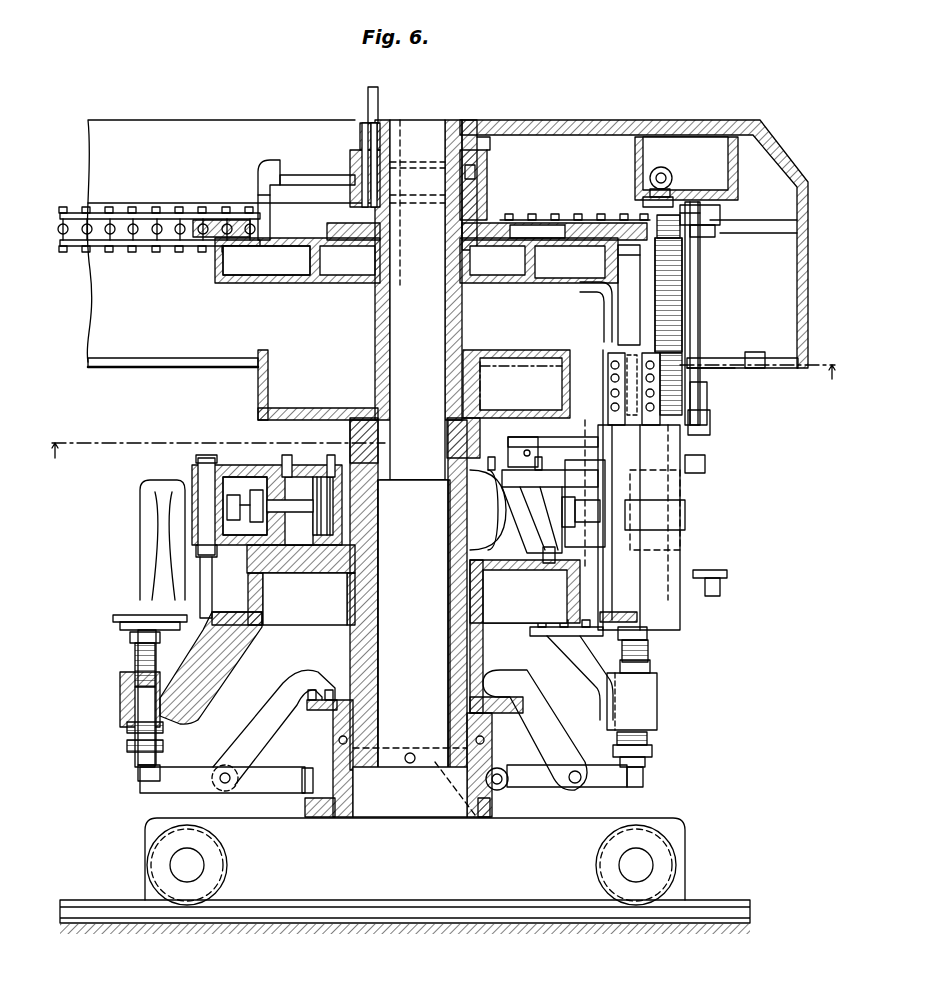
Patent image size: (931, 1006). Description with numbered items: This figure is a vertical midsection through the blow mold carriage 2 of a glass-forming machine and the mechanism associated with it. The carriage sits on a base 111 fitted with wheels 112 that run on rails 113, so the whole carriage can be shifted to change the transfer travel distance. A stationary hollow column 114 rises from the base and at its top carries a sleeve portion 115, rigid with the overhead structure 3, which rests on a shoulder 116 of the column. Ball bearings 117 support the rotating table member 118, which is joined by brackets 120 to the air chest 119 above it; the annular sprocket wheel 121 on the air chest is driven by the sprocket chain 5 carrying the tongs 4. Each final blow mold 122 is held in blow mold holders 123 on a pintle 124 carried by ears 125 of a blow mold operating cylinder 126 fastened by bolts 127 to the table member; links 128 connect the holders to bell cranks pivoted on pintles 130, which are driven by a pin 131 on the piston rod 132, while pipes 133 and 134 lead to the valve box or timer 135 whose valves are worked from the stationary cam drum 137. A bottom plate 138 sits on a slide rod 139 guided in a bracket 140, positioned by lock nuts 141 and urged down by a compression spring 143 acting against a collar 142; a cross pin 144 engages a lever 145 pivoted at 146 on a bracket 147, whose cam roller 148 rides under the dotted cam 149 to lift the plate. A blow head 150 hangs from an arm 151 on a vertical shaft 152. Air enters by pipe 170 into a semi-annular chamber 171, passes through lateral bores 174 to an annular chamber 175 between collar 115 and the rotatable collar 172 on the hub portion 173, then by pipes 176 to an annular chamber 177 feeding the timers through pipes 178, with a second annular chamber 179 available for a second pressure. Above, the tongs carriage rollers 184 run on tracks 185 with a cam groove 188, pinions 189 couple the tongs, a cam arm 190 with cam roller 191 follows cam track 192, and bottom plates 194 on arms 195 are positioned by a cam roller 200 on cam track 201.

The blow mold carriage 2 is at (118, 531).
The overhead structure 3 is at (186, 125).
The tongs 4 is at (738, 512).
The sprocket chain 5 is at (135, 238).
The base 111 is at (250, 838).
The wheels 112 is at (680, 855).
The rails 113 is at (78, 900).
The stationary hollow column 114 is at (355, 808).
The sleeve portion 115 is at (468, 128).
The shoulder 116 is at (395, 240).
The ball bearings 117 is at (305, 768).
The table member 118 is at (360, 650).
The air chest 119 is at (520, 280).
The brackets 120 is at (660, 625).
The annular sprocket wheel 121 is at (212, 232).
The final blow molds 122 is at (140, 490).
The blow mold holders 123 is at (690, 518).
The pintle 124 is at (205, 455).
The ears 125 is at (232, 470).
The blow mold operating cylinder 126 is at (300, 460).
The bolts 127 is at (525, 570).
The links 128 is at (605, 540).
The pintles 130 is at (580, 478).
The pin 131 is at (262, 490).
The piston rod 132 is at (300, 555).
The pipe 133 is at (298, 465).
The pipe 134 is at (365, 470).
The valve box or timer 135 is at (702, 425).
The stationary cam drum 137 is at (255, 350).
The bottom plate 138 is at (128, 618).
The slide rod 139 is at (140, 690).
The bracket 140 is at (270, 635).
The lock nuts 141 is at (130, 658).
The collar 142 is at (127, 748).
The compression spring 143 is at (127, 730).
The cross pin 144 is at (140, 775).
The lever 145 is at (185, 768).
The pivot 146 is at (215, 782).
The bracket 147 is at (280, 710).
The cam roller 148 is at (300, 820).
The cam 149 is at (440, 810).
The blow head 150 is at (705, 462).
The arm 151 is at (595, 455).
The vertical shaft 152 is at (520, 425).
The pipe 170 is at (378, 98).
The semi-annular chamber 171 is at (360, 135).
The rotatable collar 172 is at (487, 190).
The hub portion 173 is at (520, 223).
The lateral bores 174 is at (390, 160).
The annular chamber 175 is at (490, 175).
The pipes 176 is at (265, 172).
The annular chamber 177 is at (230, 280).
The pipes 178 is at (580, 287).
The second annular chamber 179 is at (340, 272).
The horizontal axis rollers 184 is at (665, 170).
The tracks 185 is at (652, 165).
The cam groove 188 is at (680, 203).
The pinions 189 is at (710, 408).
The cam arm 190 is at (735, 372).
The cam roller 191 is at (755, 352).
The cam track 192 is at (105, 364).
The bottom plates 194 is at (720, 572).
The arm 195 is at (712, 596).
The cam roller 200 is at (722, 232).
The cam track 201 is at (760, 240).